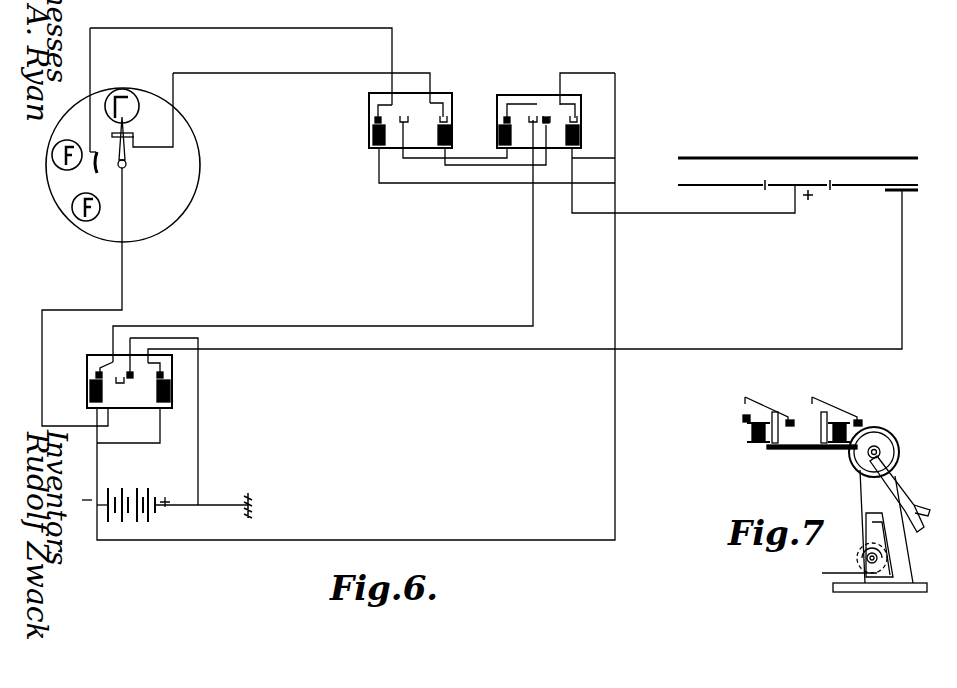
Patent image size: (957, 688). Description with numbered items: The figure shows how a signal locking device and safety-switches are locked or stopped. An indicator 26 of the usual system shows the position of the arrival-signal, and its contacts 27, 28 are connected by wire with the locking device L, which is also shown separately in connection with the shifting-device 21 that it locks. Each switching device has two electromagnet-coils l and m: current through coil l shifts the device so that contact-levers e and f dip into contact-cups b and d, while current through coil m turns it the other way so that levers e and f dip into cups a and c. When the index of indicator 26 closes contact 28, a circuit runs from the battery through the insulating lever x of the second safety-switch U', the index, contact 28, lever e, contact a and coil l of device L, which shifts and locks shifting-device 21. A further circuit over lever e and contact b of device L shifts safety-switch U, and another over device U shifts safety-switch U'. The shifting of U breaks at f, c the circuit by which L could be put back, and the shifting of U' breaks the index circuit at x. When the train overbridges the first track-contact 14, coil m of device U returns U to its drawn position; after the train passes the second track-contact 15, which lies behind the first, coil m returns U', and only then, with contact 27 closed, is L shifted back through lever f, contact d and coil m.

In FIG. 6, the indicator 26 is at (123, 165).
In FIG. 6, the contact of the indicator 27 is at (136, 134).
In FIG. 6, the contact of the indicator 28 is at (93, 173).
In FIG. 7, the shifting-device 21 is at (898, 455).
In FIG. 6, the track-contact 14 is at (798, 179).
In FIG. 6, the track-contact 15 is at (907, 177).
In FIG. 6, the locking device L is at (407, 114).
In FIG. 7, the locking device L is at (804, 413).
In FIG. 6, the safety-switch U is at (546, 115).
In FIG. 6, the second safety-switch U' is at (130, 381).
In FIG. 6, the contact-cup a is at (374, 121).
In FIG. 7, the contact-cup a is at (743, 419).
In FIG. 6, the contact-cup b is at (410, 126).
In FIG. 6, the contact-cup c is at (549, 126).
In FIG. 6, the contact-cup d is at (450, 119).
In FIG. 7, the contact-cup d is at (862, 420).
In FIG. 6, the contact-lever e is at (396, 100).
In FIG. 6, the contact-lever f is at (436, 100).
In FIG. 6, the electromagnet-coil l is at (372, 145).
In FIG. 7, the electromagnet-coil l is at (752, 440).
In FIG. 6, the electromagnet-coil m is at (452, 137).
In FIG. 6, the insulating-contact x is at (140, 380).